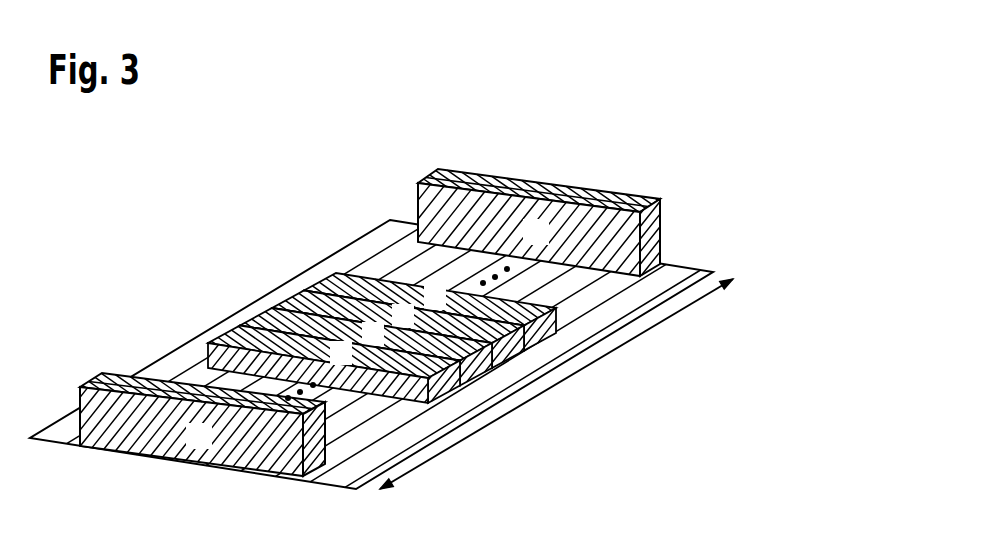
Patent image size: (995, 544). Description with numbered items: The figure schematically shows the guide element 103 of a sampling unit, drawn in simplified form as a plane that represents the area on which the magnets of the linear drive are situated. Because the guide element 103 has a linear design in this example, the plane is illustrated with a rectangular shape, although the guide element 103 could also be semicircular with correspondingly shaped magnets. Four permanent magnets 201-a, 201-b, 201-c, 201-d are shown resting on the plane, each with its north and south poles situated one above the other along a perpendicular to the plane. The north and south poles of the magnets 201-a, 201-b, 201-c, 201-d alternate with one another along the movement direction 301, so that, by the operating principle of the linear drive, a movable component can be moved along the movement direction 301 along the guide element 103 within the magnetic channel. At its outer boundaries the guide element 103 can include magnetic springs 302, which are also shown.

The guide element 103 is at (678, 278).
The magnet 201-a is at (233, 337).
The magnet 201-b is at (273, 317).
The magnet 201-c is at (303, 310).
The magnet 201-d is at (357, 280).
The movement direction 301 is at (497, 421).
The magnetic springs 302 is at (427, 178).